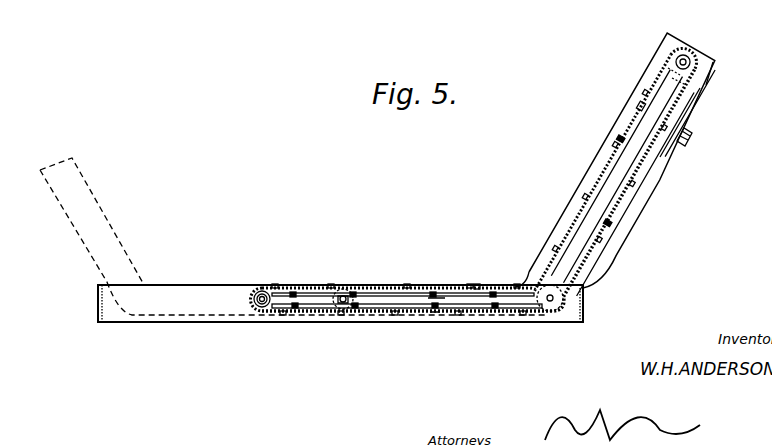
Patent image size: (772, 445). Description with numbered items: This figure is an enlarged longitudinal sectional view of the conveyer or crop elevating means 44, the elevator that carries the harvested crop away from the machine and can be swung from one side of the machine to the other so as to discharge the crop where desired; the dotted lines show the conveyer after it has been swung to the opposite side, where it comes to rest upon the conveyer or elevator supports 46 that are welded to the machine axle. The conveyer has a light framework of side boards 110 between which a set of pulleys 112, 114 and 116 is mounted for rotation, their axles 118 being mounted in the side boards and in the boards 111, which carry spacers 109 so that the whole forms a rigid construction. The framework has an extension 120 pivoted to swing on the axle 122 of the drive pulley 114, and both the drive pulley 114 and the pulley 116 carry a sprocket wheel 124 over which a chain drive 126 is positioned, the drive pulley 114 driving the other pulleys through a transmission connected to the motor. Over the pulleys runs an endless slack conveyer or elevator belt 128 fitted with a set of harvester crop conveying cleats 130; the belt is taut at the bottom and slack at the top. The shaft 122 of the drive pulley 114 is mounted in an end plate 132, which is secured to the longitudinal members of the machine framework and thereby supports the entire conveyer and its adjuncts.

The conveyer or crop elevating means 44 is at (107, 231).
The conveyer or elevator supports 46 is at (690, 137).
The spacers 109 is at (425, 288).
The side boards 110 is at (570, 210).
The boards 111 is at (665, 98).
The pulley 112 is at (698, 60).
The drive pulley 114 is at (352, 292).
The pulley 116 is at (268, 310).
The axles 118 is at (655, 108).
The extension 120 is at (302, 283).
The axle of the drive pulley 122 is at (343, 305).
The sprocket wheel 124 is at (262, 312).
The chain drive 126 is at (303, 313).
The endless slack conveyer or elevator belt 128 is at (478, 288).
The harvester crop conveying cleats 130 is at (468, 283).
The end plate 132 is at (200, 290).